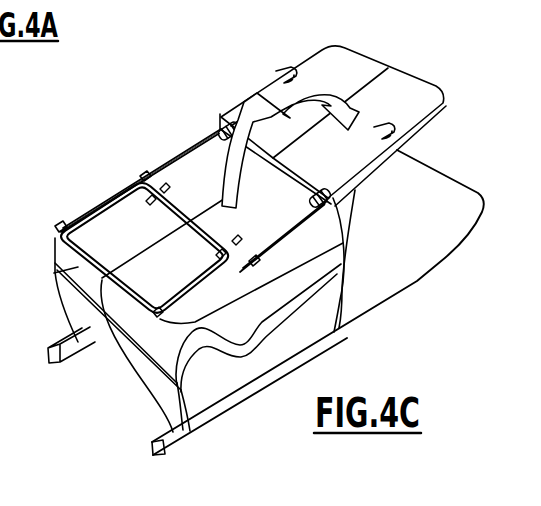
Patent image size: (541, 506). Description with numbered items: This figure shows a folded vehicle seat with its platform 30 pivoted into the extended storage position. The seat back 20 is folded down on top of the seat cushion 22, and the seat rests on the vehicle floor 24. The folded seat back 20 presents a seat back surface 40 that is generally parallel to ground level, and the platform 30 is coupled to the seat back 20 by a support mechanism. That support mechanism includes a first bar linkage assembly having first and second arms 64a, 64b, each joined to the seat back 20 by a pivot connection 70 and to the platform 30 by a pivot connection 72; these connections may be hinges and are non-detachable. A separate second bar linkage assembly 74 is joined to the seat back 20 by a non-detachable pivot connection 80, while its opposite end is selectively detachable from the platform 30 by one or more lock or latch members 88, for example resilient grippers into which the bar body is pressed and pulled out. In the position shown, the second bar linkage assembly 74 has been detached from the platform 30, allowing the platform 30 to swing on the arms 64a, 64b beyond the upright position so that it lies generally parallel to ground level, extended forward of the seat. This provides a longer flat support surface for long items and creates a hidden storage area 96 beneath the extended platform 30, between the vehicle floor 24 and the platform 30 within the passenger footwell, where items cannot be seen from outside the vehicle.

The seat back 20 is at (54, 273).
The seat cushion 22 is at (130, 362).
The vehicle floor 24 is at (380, 305).
The platform 30 is at (354, 55).
The seat back surface 40 is at (280, 222).
The first arm 64a is at (183, 152).
The second arm 64b is at (300, 223).
The pivot connection 70 is at (144, 173).
The pivot connection 72 is at (340, 200).
The second bar linkage assembly 74 is at (102, 213).
The pivot connection 80 is at (58, 228).
The lock or latch member 88 is at (282, 67).
The hidden storage area 96 is at (437, 148).